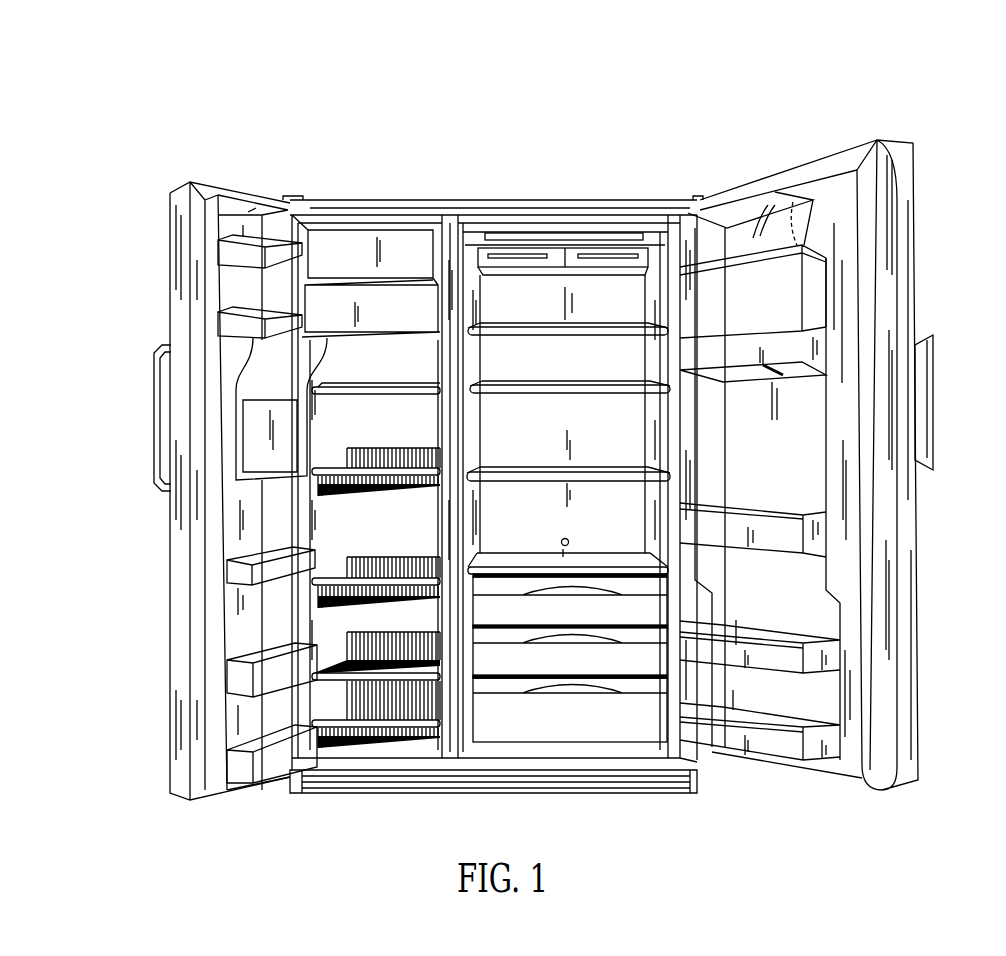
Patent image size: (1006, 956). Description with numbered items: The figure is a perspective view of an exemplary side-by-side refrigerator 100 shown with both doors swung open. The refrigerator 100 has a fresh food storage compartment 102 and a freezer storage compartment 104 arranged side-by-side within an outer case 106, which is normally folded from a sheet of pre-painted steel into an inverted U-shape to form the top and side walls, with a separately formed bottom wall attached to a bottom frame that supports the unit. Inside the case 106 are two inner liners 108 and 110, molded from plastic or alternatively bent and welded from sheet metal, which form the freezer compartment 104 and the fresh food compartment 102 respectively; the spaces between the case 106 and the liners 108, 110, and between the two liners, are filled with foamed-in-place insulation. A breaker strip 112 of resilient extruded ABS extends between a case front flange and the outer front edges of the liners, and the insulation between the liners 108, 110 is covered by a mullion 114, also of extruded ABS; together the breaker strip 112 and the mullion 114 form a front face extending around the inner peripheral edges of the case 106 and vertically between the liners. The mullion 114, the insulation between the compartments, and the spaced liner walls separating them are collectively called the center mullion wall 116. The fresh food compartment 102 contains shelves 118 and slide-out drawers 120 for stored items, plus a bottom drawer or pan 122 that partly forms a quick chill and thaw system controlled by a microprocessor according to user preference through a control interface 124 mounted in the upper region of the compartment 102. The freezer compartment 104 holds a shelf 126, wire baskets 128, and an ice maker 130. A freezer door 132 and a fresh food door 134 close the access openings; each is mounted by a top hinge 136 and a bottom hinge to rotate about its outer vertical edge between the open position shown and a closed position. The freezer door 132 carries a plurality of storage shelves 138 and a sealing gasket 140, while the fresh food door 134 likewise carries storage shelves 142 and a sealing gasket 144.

The refrigerator 100 is at (563, 70).
The fresh food storage compartment 102 is at (654, 224).
The freezer storage compartment 104 is at (406, 252).
The outer case 106 is at (528, 195).
The inner liner 108 is at (598, 227).
The inner liner 110 is at (350, 228).
The breaker strip 112 is at (611, 208).
The mullion 114 is at (447, 472).
The center mullion wall 116 is at (482, 422).
The shelves 118 is at (492, 337).
The slide-out drawers 120 is at (585, 620).
The bottom drawer or pan 122 is at (585, 731).
The control interface 124 is at (503, 236).
The shelf 126 is at (370, 397).
The wire baskets 128 is at (350, 500).
The ice maker 130 is at (370, 313).
The freezer door 132 is at (150, 208).
The fresh food door 134 is at (928, 202).
The top hinge 136 is at (293, 198).
The storage shelves 138 is at (238, 773).
The sealing gasket 140 is at (208, 193).
The storage shelves 142 is at (757, 377).
The sealing gasket 144 is at (847, 163).